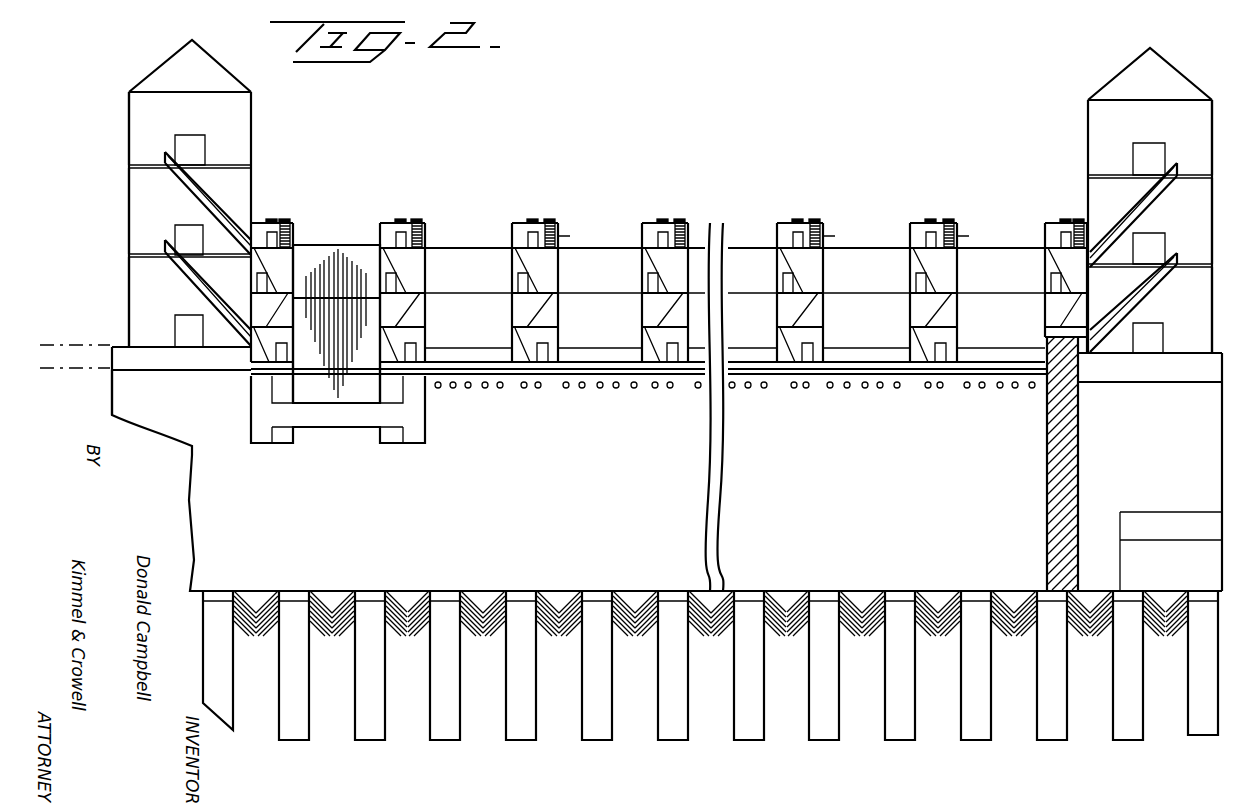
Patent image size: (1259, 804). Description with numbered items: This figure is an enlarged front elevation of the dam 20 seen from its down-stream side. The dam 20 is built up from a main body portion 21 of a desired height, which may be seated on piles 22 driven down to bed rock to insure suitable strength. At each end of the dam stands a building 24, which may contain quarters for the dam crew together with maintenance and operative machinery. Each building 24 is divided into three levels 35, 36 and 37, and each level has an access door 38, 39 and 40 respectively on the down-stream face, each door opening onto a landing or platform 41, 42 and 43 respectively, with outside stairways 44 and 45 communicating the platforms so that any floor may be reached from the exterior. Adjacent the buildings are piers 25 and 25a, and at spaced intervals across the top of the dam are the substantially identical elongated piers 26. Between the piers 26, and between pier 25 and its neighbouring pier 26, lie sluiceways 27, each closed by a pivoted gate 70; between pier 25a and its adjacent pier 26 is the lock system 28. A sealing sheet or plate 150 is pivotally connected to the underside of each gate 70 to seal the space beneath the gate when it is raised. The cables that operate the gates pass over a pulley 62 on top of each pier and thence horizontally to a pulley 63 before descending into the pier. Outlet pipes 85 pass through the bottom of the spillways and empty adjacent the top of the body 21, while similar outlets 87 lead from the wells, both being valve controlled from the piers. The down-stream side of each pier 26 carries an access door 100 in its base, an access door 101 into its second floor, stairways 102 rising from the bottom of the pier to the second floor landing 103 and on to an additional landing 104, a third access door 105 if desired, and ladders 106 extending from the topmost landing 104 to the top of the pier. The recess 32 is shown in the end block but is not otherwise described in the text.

The dam 20 is at (667, 407).
The main body portion 21 is at (1150, 472).
The piles 22 is at (598, 740).
The building 24 is at (128, 133).
The pier 25 is at (1060, 225).
The pier 25a is at (278, 222).
The elongated pier 26 is at (400, 222).
The sluiceway 27 is at (484, 378).
The lock system 28 is at (305, 245).
The recess 32 is at (1171, 551).
The level 35 is at (128, 287).
The level 36 is at (128, 200).
The level 37 is at (128, 152).
The access door 38 is at (176, 326).
The access door 39 is at (178, 232).
The access door 40 is at (185, 135).
The landing or platform 41 is at (140, 347).
The landing or platform 42 is at (128, 258).
The landing or platform 43 is at (128, 168).
The outside stairway 44 is at (182, 283).
The outside stairway 45 is at (186, 196).
The pulley 62 is at (790, 222).
The pulley 63 is at (425, 223).
The gate 70 is at (484, 248).
The outlet pipe 85 is at (468, 390).
The outlet 87 is at (538, 390).
The access door 100 is at (562, 340).
The access door 101 is at (512, 275).
The stairway 102 is at (662, 318).
The second floor landing 103 is at (690, 292).
The landing 104 is at (540, 268).
The third access door 105 is at (522, 222).
The ladder 106 is at (560, 236).
The sealing sheet or plate 150 is at (735, 322).